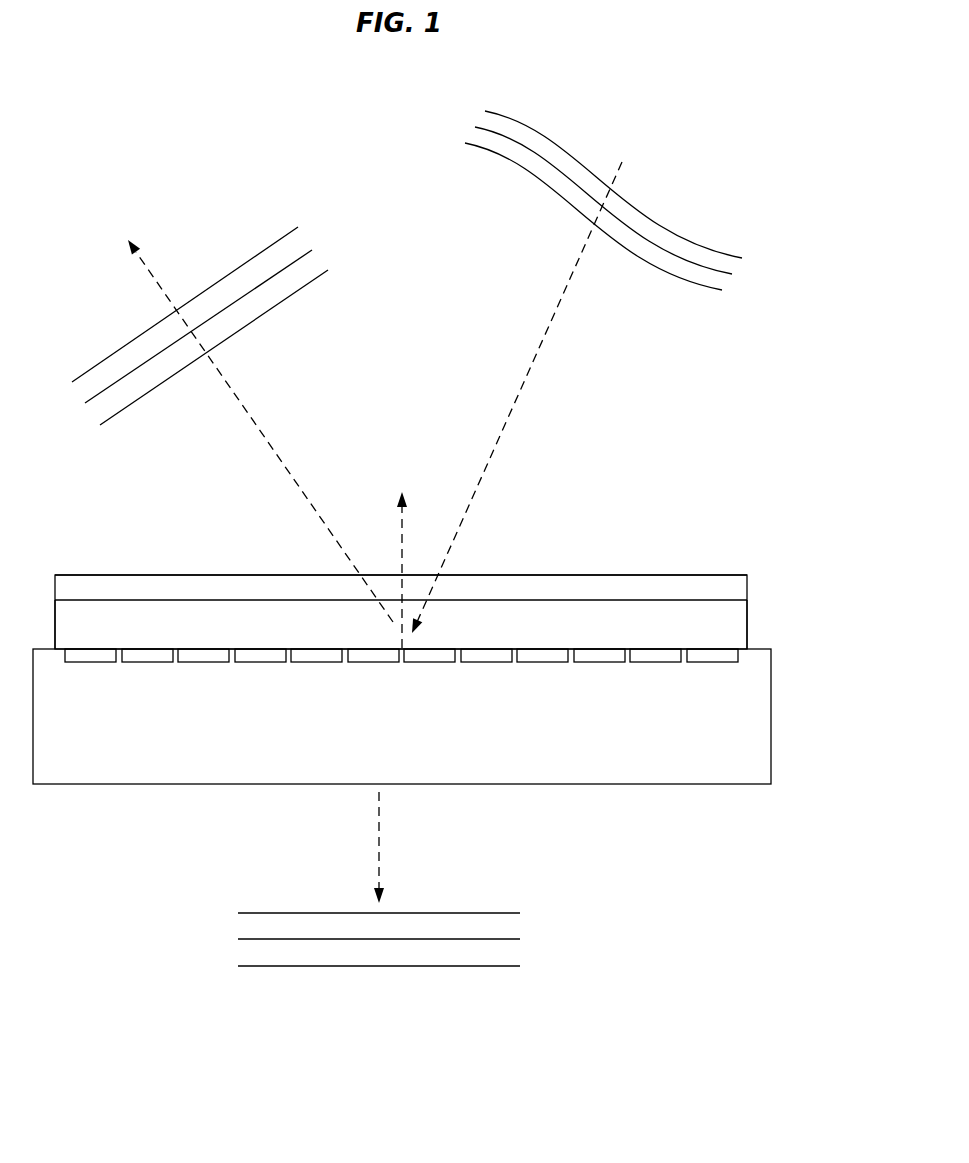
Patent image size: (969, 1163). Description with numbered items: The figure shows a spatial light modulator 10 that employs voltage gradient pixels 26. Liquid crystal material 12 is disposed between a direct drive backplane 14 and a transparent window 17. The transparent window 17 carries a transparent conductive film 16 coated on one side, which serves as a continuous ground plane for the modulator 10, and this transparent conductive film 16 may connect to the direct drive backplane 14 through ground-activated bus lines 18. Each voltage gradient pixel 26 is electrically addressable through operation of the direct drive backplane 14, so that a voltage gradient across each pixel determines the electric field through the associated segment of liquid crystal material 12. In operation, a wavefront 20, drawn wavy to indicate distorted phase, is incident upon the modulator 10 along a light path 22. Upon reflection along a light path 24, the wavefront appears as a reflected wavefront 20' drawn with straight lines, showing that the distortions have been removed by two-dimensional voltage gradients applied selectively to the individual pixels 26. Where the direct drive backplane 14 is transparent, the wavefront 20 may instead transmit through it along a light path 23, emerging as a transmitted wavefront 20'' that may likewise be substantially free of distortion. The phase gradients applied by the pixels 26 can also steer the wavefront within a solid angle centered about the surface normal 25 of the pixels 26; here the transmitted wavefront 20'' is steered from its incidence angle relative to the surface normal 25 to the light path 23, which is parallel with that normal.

The spatial light modulator 10 is at (778, 573).
The liquid crystal material 12 is at (401, 593).
The direct drive backplane 14 is at (413, 742).
The transparent conductive film 16 is at (245, 601).
The transparent window 17 is at (198, 585).
The ground-activated bus lines 18 is at (55, 614).
The wavefront 20 is at (613, 243).
The reflected wavefront 20' is at (201, 326).
The transmitted wavefront 20'' is at (420, 924).
The light path 22 is at (510, 413).
The light path 23 is at (380, 813).
The light path 24 is at (273, 457).
The surface normal 25 is at (400, 532).
The voltage gradient pixels 26 is at (607, 655).